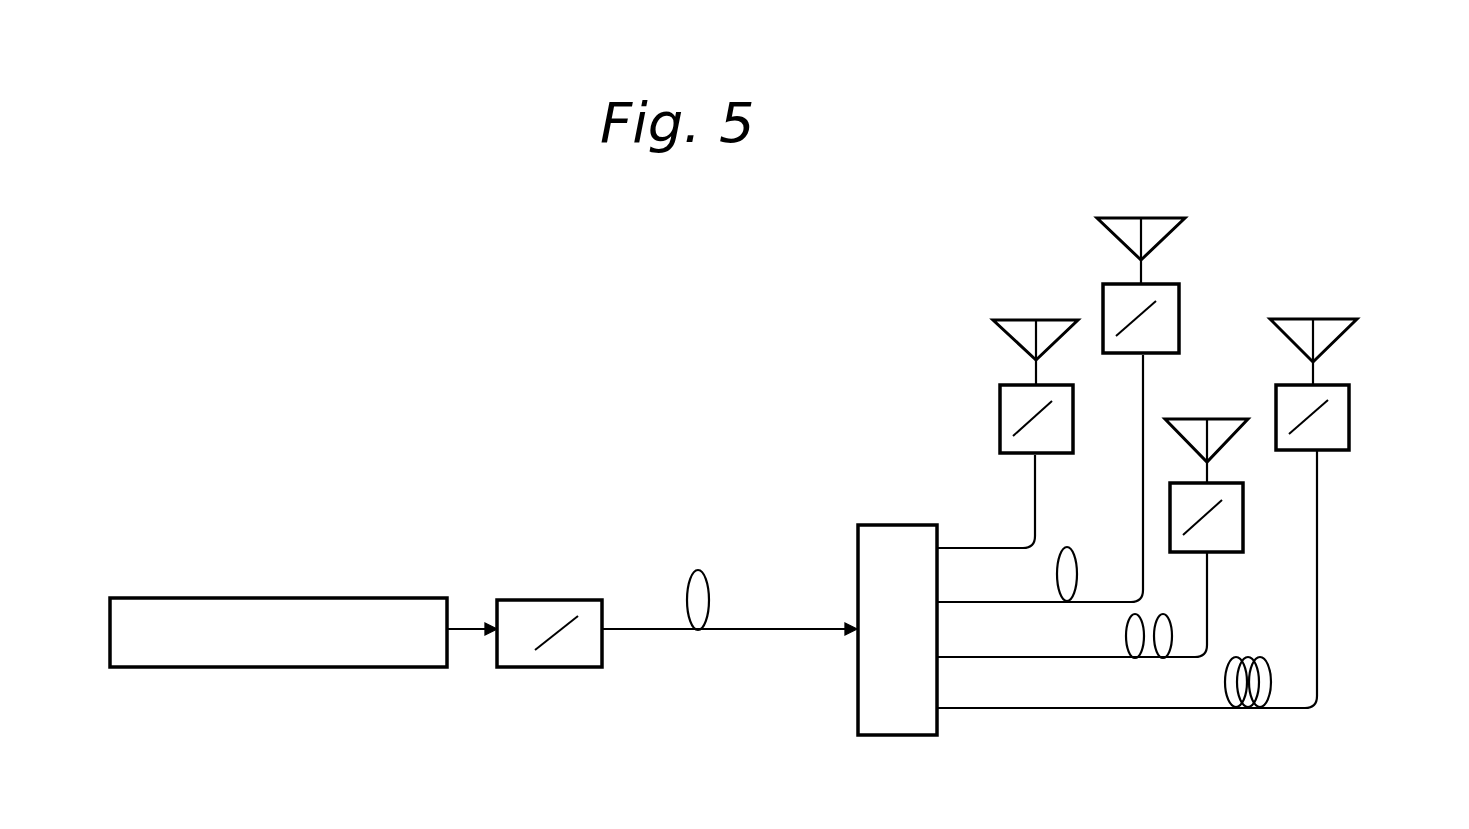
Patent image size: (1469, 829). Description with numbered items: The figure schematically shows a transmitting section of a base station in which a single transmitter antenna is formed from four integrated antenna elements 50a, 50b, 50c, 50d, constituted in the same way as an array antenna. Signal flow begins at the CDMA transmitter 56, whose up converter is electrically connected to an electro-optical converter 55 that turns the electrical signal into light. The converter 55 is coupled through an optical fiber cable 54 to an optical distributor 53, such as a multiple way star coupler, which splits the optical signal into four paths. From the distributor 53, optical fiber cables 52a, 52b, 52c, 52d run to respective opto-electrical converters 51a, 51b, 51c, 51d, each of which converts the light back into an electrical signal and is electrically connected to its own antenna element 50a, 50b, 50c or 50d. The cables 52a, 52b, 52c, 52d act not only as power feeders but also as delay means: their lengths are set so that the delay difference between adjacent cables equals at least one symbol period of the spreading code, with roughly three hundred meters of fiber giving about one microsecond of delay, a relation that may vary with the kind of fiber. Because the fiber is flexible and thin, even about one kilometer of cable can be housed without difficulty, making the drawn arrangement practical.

The antenna element 50a is at (1020, 318).
The antenna element 50b is at (1125, 216).
The antenna element 50c is at (1192, 418).
The antenna element 50d is at (1300, 318).
The opto-electrical converter 51a is at (1000, 418).
The opto-electrical converter 51b is at (1180, 330).
The opto-electrical converter 51c is at (1222, 553).
The opto-electrical converter 51d is at (1350, 422).
The optical fiber cable 52a is at (1036, 486).
The optical fiber cable 52b is at (1142, 536).
The optical fiber cable 52c is at (1208, 624).
The optical fiber cable 52d is at (1318, 612).
The optical distributor 53 is at (900, 525).
The optical fiber cable 54 is at (709, 578).
The electro-optical converter 55 is at (550, 600).
The CDMA transmitter 56 is at (280, 598).